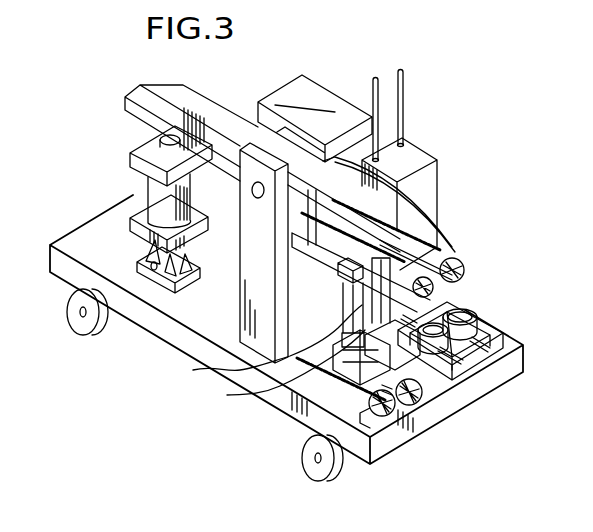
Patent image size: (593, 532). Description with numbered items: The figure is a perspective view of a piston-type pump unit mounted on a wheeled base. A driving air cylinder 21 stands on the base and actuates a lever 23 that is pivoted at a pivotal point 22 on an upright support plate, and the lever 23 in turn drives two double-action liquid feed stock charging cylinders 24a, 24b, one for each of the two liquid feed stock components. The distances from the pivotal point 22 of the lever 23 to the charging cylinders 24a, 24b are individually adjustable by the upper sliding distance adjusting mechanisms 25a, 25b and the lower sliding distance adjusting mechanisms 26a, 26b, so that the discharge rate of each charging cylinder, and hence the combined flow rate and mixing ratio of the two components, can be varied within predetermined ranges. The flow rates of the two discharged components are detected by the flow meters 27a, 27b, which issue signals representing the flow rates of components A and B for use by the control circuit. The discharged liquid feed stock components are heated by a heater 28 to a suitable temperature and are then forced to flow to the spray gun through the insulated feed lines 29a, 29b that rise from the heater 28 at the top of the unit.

The driving air cylinder 21 is at (150, 190).
The pivotal point 22 is at (255, 197).
The lever 23 is at (155, 110).
The liquid feed stock charging cylinder 24a is at (257, 344).
The liquid feed stock charging cylinder 24b is at (272, 371).
The upper sliding distance adjusting mechanism 25a is at (397, 227).
The upper sliding distance adjusting mechanism 25b is at (385, 202).
The lower sliding distance adjusting mechanism 26a is at (395, 375).
The lower sliding distance adjusting mechanism 26b is at (395, 375).
The flow meter 27a is at (480, 320).
The flow meter 27b is at (462, 309).
The heater 28 is at (412, 148).
The insulated feed line 29a is at (373, 95).
The insulated feed line 29b is at (403, 92).